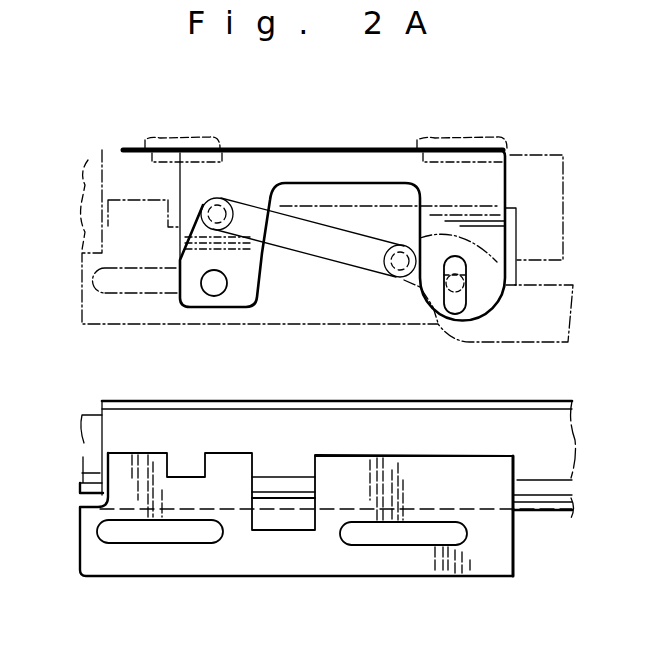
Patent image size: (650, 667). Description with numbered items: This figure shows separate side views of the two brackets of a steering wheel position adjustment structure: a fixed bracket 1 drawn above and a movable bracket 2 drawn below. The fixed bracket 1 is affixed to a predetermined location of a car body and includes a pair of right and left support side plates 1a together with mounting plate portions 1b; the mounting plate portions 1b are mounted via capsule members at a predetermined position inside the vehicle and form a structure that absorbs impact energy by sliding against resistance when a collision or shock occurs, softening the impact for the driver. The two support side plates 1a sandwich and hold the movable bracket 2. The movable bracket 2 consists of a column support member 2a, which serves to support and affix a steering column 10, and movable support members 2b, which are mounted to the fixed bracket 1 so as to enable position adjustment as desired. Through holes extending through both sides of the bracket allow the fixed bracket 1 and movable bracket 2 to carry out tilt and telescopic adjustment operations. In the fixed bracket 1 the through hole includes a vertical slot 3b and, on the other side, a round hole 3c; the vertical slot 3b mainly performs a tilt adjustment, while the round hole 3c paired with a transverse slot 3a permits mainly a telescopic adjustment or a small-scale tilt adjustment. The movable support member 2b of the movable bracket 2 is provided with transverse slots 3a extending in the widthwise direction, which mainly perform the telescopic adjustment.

The fixed bracket 1 is at (376, 145).
The support side plate 1a is at (495, 185).
The mounting plate portion 1b is at (291, 148).
The movable bracket 2 is at (75, 557).
The column support member 2a is at (500, 578).
The movable support member 2b is at (440, 470).
The transverse slot 3a is at (177, 534).
The vertical slot 3b is at (455, 297).
The round hole 3c is at (217, 290).
The steering column 10 is at (548, 402).